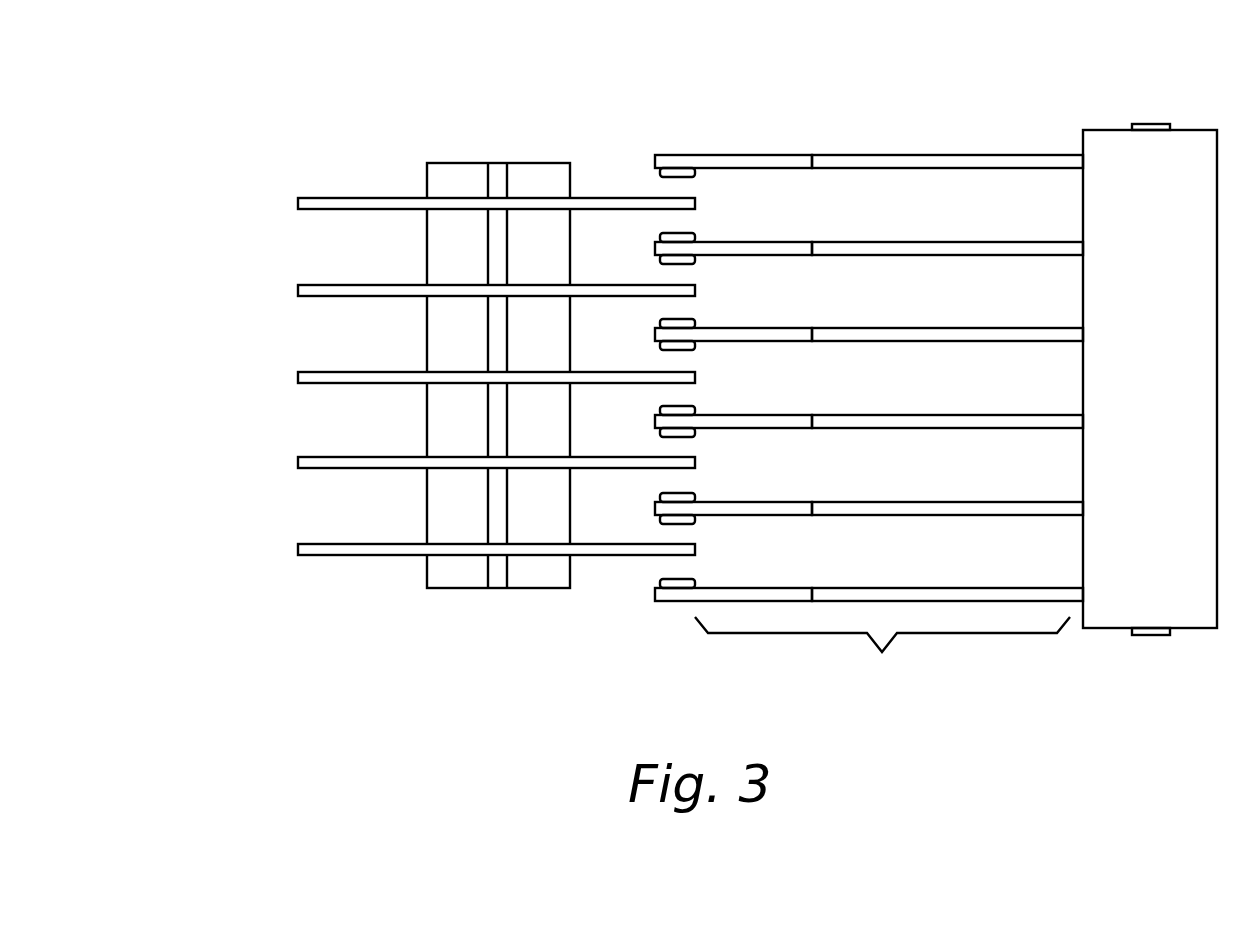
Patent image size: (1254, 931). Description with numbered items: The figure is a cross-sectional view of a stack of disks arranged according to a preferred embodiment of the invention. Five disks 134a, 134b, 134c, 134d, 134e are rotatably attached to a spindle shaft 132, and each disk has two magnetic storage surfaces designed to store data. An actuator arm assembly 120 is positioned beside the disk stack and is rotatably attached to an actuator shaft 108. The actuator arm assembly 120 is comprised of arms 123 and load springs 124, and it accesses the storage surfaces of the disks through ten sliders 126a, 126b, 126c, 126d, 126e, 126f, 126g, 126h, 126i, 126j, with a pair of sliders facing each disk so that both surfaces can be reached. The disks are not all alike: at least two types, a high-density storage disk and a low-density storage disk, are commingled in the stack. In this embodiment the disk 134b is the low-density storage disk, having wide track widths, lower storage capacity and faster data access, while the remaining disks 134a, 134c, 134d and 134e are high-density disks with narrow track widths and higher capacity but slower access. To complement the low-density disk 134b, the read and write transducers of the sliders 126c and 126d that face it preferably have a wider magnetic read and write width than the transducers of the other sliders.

The actuator shaft 108 is at (1155, 124).
The actuator arm assembly 120 is at (882, 656).
The arms 123 is at (922, 243).
The load springs 124 is at (795, 243).
The slider 126a is at (656, 181).
The slider 126b is at (698, 230).
The slider 126c is at (656, 268).
The slider 126d is at (698, 317).
The slider 126e is at (656, 355).
The slider 126f is at (698, 404).
The slider 126g is at (656, 442).
The slider 126h is at (698, 491).
The slider 126i is at (656, 528).
The slider 126j is at (698, 577).
The spindle shaft 132 is at (501, 162).
The disk 134a is at (287, 204).
The disk 134b is at (287, 290).
The disk 134c is at (287, 377).
The disk 134d is at (287, 463).
The disk 134e is at (287, 549).